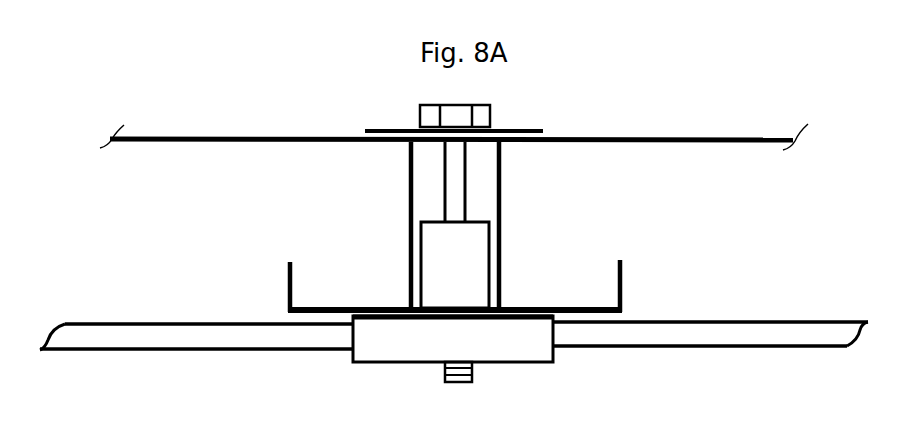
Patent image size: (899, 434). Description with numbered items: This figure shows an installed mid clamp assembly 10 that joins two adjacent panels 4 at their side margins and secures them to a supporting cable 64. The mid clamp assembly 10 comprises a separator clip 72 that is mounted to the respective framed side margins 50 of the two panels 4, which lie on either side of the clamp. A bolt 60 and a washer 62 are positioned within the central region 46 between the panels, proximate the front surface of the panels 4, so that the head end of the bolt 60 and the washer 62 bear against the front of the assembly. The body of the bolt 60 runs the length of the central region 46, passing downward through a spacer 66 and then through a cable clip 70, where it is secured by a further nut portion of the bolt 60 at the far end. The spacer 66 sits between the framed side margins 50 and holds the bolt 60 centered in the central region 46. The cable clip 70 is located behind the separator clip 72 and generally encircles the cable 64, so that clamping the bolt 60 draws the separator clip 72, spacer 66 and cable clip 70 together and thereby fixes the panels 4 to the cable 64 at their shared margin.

The panel 4 is at (232, 229).
The mid clamp assembly 10 is at (572, 124).
The central region 46 is at (442, 153).
The framed side margin 50 is at (410, 204).
The bolt 60 is at (490, 108).
The washer 62 is at (366, 130).
The cable 64 is at (222, 352).
The spacer 66 is at (472, 270).
The cable clip 70 is at (472, 348).
The separator clip 72 is at (289, 291).